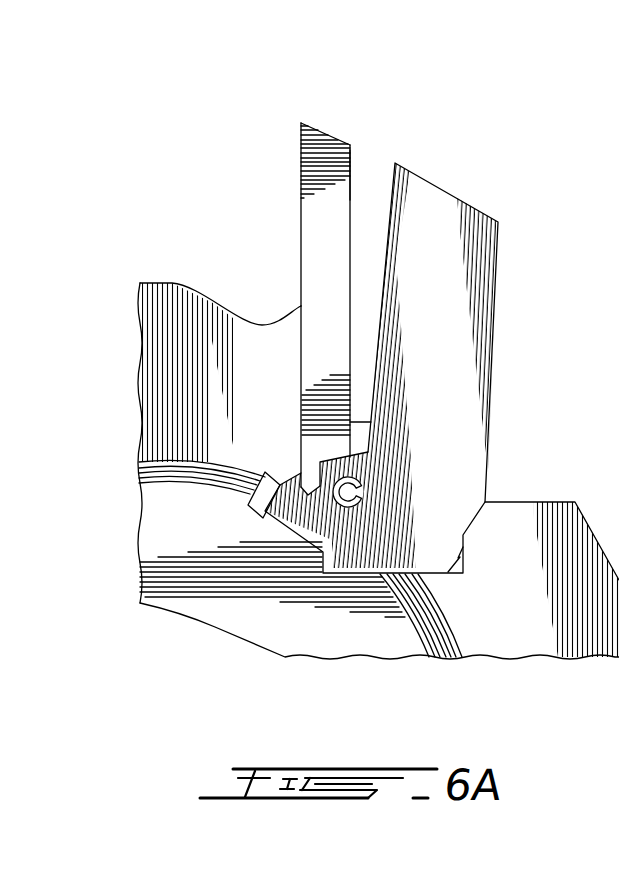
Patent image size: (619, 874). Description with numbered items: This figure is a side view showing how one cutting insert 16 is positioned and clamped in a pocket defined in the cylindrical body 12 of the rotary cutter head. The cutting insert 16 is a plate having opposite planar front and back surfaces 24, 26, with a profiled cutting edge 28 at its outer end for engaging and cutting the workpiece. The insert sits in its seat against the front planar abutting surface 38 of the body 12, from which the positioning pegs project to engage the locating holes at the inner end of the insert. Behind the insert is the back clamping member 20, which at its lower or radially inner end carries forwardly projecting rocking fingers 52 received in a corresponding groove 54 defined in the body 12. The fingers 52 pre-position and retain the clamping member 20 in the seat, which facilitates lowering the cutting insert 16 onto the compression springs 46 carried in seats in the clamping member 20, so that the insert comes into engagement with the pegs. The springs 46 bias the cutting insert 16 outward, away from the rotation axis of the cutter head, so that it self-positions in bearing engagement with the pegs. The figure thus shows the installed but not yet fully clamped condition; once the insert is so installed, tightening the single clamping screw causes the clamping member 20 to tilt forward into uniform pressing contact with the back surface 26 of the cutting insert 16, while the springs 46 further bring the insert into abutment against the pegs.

The cylindrical body 12 is at (370, 635).
The cutting insert 16 is at (327, 157).
The back clamping member 20 is at (437, 240).
The front surface 24 is at (301, 168).
The back surface 26 is at (351, 162).
The cutting edge 28 is at (301, 123).
The front planar abutting surface 38 is at (300, 354).
The compression springs 46 is at (322, 452).
The rocking fingers 52 is at (290, 503).
The groove 54 is at (255, 502).